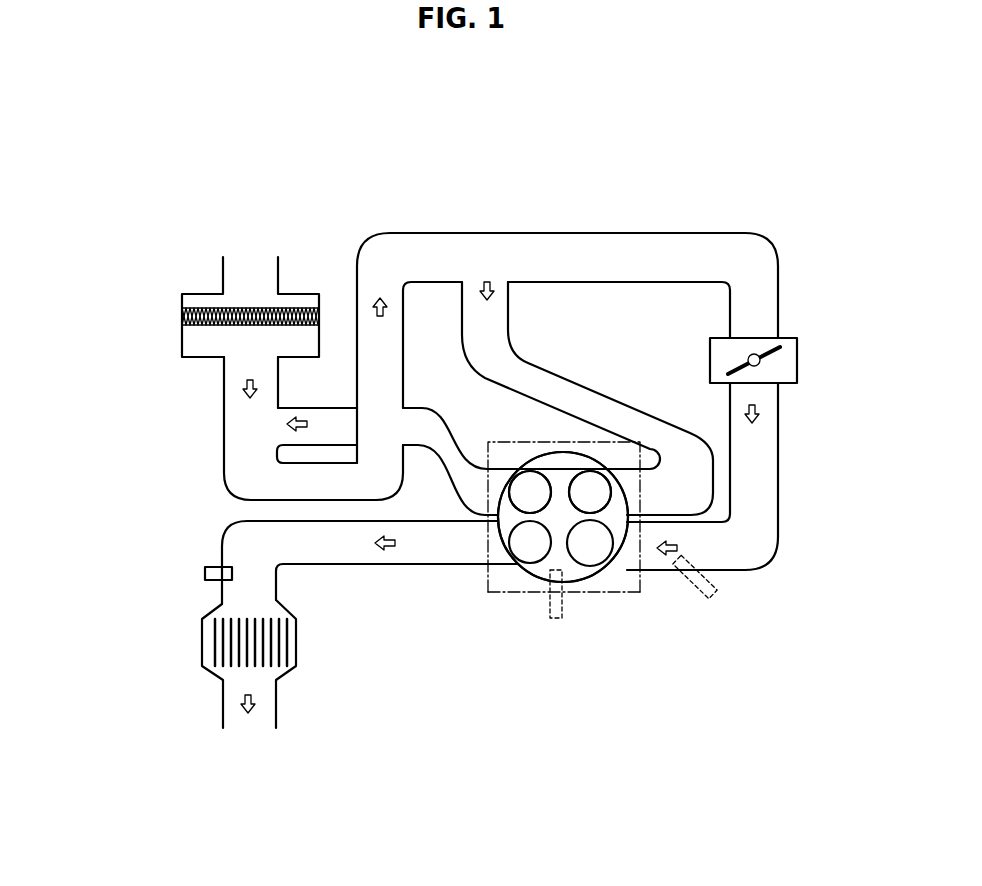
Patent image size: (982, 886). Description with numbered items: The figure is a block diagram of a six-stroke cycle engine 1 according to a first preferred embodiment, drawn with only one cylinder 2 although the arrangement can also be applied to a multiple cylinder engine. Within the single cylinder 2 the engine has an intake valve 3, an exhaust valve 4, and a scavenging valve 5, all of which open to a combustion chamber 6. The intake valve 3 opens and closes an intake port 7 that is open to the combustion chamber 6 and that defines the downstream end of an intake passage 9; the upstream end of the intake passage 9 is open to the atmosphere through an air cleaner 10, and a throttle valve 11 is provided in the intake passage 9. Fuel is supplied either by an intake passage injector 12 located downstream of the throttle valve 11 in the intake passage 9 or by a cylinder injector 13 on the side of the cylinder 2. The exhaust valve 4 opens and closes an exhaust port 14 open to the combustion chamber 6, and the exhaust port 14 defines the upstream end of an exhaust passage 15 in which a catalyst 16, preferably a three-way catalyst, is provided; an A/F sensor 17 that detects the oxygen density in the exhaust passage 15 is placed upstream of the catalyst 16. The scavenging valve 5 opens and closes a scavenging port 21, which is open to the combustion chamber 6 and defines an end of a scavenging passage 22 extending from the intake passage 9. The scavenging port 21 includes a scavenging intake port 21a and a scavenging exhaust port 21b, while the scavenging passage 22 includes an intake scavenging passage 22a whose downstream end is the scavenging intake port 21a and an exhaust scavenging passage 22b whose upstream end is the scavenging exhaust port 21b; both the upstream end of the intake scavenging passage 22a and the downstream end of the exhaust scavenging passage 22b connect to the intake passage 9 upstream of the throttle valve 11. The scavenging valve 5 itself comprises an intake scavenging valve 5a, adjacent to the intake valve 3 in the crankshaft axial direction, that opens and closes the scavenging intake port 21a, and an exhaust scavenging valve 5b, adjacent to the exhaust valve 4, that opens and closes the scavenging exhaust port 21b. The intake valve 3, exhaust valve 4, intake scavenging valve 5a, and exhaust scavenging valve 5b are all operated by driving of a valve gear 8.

The six-stroke cycle engine 1 is at (122, 249).
The cylinder 2 is at (523, 577).
The intake valve 3 is at (593, 570).
The exhaust valve 4 is at (525, 537).
The scavenging valve 5 is at (610, 333).
The intake scavenging valve 5a is at (588, 485).
The exhaust scavenging valve 5b is at (531, 491).
The combustion chamber 6 is at (575, 580).
The intake port 7 is at (628, 570).
The valve gear 8 is at (530, 592).
The intake passage 9 is at (758, 300).
The air cleaner 10 is at (182, 332).
The throttle valve 11 is at (770, 355).
The intake passage injector 12 is at (713, 590).
The cylinder injector 13 is at (552, 620).
The exhaust port 14 is at (498, 556).
The exhaust passage 15 is at (342, 543).
The catalyst 16 is at (213, 642).
The A/F sensor 17 is at (205, 572).
The scavenging port 21 is at (617, 197).
The scavenging intake port 21a is at (627, 473).
The scavenging exhaust port 21b is at (500, 477).
The scavenging passage 22 is at (420, 197).
The intake scavenging passage 22a is at (482, 347).
The exhaust scavenging passage 22b is at (333, 423).